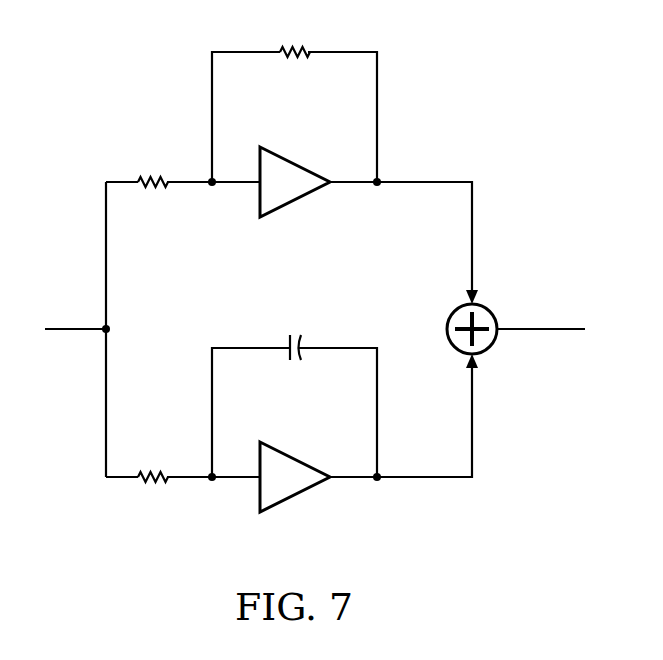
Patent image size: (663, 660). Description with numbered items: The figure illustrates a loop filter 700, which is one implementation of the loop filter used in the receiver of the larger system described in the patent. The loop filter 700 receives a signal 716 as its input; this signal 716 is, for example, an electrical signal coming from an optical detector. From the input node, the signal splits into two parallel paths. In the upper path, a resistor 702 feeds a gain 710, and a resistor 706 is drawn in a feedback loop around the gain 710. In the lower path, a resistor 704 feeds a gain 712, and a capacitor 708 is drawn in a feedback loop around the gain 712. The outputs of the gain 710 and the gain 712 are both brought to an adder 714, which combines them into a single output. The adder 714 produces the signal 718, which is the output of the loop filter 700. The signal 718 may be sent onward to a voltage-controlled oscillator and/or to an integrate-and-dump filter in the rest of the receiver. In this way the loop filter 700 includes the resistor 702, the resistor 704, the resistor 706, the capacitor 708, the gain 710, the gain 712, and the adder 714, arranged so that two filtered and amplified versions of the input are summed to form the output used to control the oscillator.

The loop filter 700 is at (507, 89).
The resistor 702 is at (152, 187).
The resistor 704 is at (152, 484).
The resistor 706 is at (292, 58).
The capacitor 708 is at (290, 364).
The gain 710 is at (298, 202).
The gain 712 is at (298, 497).
The adder 714 is at (490, 310).
The signal 716 is at (76, 327).
The signal 718 is at (560, 332).